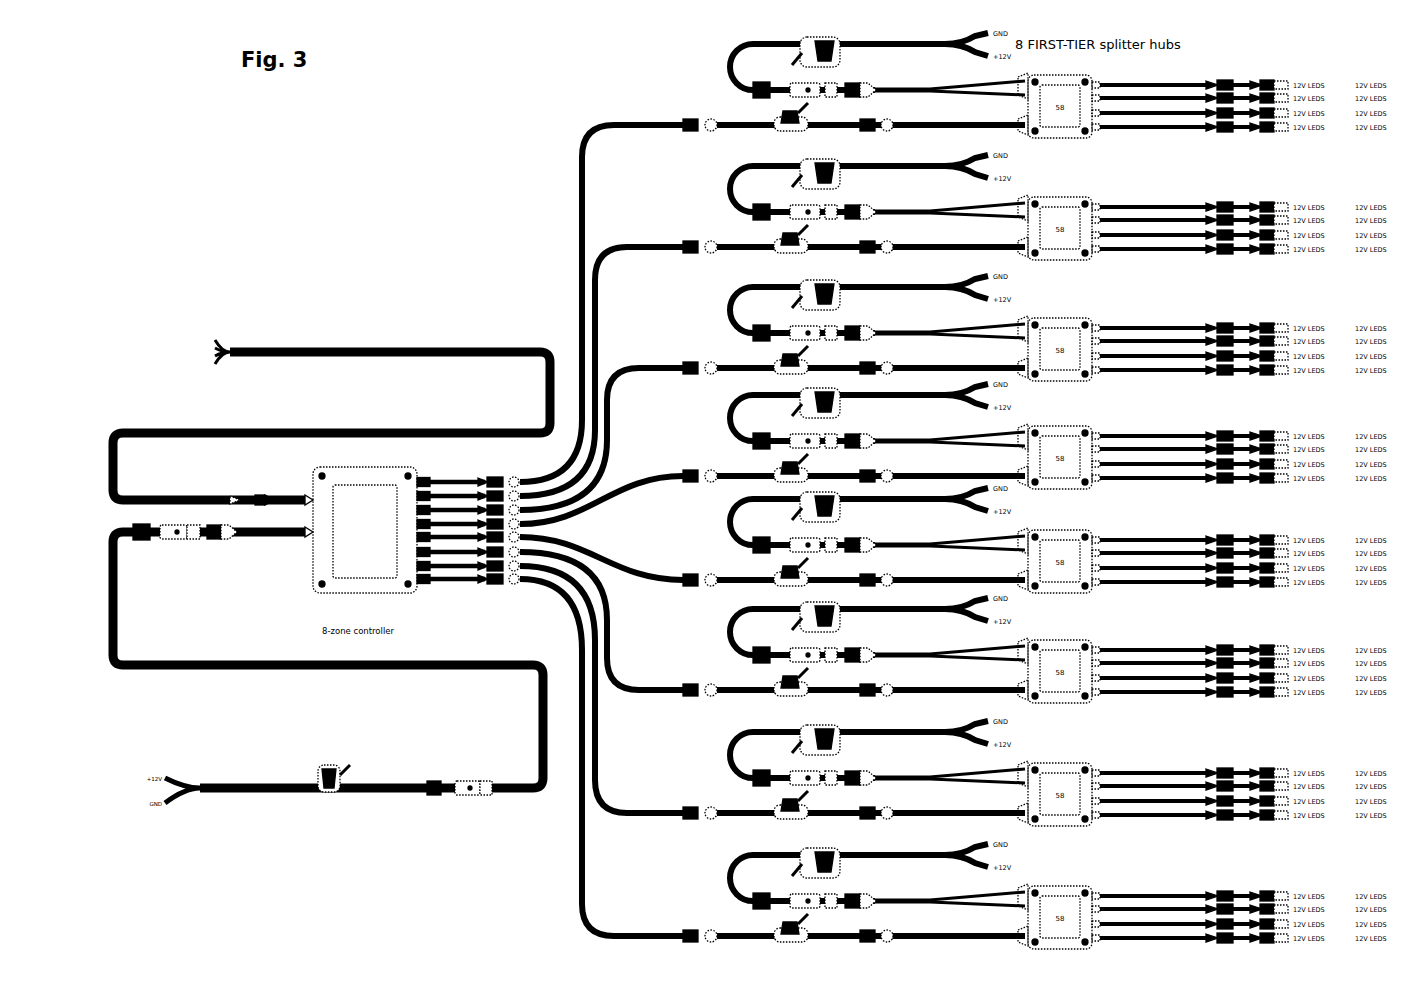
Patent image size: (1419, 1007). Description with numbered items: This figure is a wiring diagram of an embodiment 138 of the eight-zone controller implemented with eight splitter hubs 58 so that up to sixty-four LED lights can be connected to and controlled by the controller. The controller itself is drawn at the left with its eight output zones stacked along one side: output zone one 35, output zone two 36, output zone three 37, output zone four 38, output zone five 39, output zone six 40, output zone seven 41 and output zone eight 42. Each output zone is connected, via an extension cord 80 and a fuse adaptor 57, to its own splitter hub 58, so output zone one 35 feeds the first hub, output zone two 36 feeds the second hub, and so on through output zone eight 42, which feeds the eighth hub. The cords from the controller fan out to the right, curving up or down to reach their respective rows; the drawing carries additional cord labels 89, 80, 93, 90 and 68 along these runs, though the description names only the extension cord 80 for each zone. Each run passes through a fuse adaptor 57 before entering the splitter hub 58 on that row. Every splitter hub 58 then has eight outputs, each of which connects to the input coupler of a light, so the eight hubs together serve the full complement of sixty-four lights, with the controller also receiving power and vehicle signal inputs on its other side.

The lighting control harness assembly 138 is at (530, 303).
The output zone one 35 is at (423, 480).
The output zone two 36 is at (445, 481).
The output zone three 37 is at (470, 480).
The output zone four 38 is at (477, 479).
The output zone five 39 is at (430, 585).
The output zone six 40 is at (448, 585).
The output zone seven 41 is at (462, 585).
The output zone eight 42 is at (500, 590).
The zone cable 89 is at (587, 132).
The extension cord 80 is at (632, 240).
The zone cable 93 is at (644, 363).
The zone cable 90 is at (657, 472).
The zone cable 68 is at (648, 687).
The fuse adaptor 57 is at (735, 119).
The splitter hub 58 is at (1202, 511).